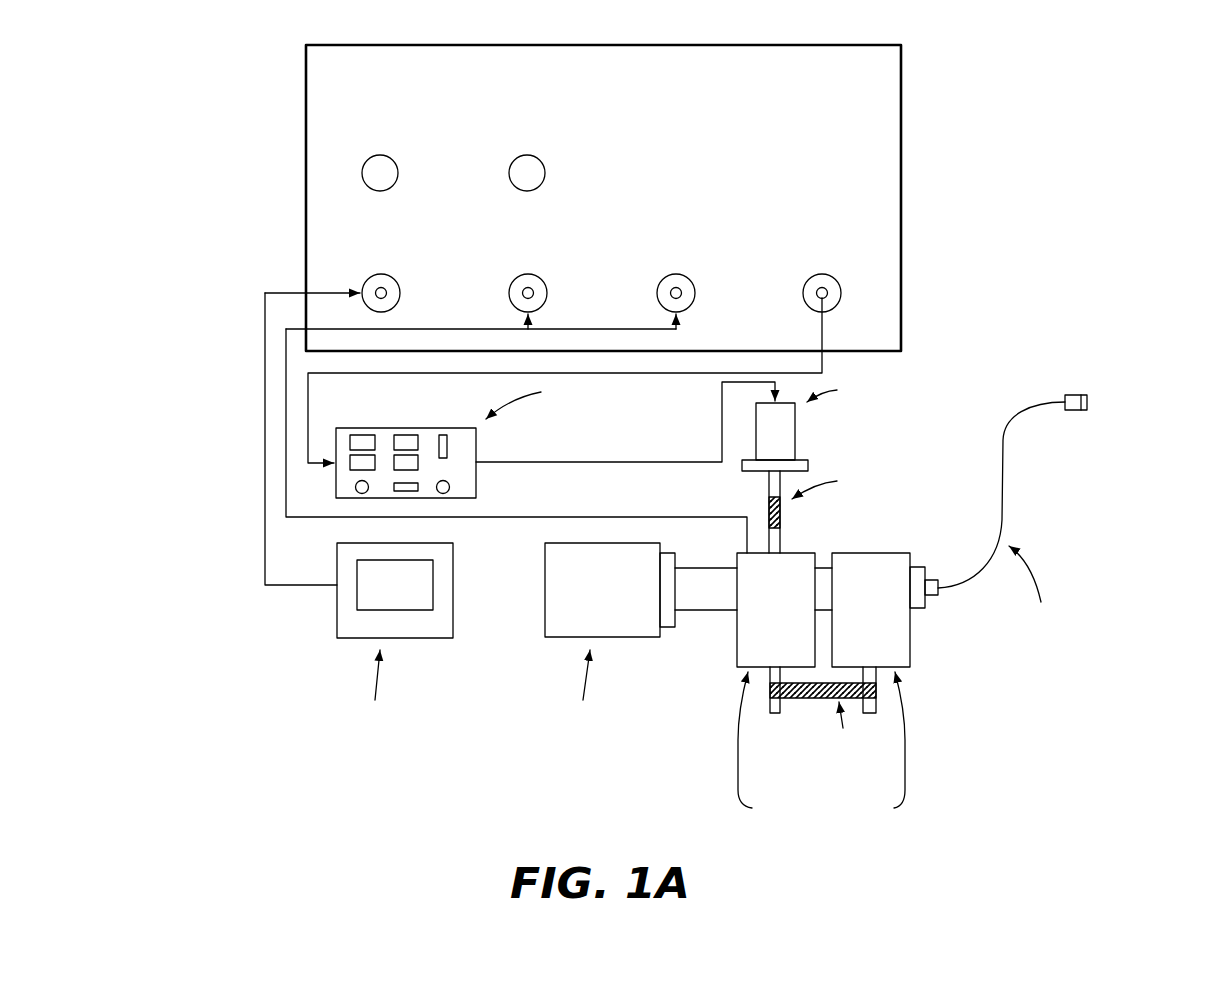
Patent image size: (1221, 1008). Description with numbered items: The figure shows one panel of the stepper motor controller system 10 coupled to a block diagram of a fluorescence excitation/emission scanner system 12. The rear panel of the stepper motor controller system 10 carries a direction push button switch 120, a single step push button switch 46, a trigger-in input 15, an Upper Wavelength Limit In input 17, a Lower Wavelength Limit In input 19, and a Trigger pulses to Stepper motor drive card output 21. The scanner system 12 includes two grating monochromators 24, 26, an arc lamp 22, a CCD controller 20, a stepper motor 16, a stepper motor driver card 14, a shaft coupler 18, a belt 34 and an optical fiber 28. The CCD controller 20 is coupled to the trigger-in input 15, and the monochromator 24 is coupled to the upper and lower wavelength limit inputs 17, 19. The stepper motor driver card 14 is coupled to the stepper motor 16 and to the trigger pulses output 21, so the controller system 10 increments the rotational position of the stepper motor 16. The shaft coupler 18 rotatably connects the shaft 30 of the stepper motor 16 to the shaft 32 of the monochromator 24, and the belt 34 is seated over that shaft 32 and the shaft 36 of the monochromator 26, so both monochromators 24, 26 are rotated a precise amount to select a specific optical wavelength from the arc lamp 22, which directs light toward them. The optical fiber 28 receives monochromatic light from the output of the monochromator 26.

The stepper motor controller system 10 is at (897, 65).
The fluorescence excitation/emission scanner system 12 is at (216, 432).
The stepper motor driver card 14 is at (472, 487).
The trigger-in input 15 is at (399, 293).
The stepper motor 16 is at (789, 440).
The Upper Wavelength Limit In input 17 is at (546, 293).
The shaft coupler 18 is at (781, 514).
The Lower Wavelength Limit In input 19 is at (694, 293).
The CCD controller 20 is at (341, 617).
The Trigger pulses to Stepper motor drive card output 21 is at (840, 293).
The arc lamp 22 is at (545, 617).
The monochromator 24 is at (737, 646).
The monochromator 26 is at (906, 647).
The optical fiber 28 is at (1005, 495).
The shaft 30 is at (768, 483).
The shaft 32 is at (781, 538).
The belt 34 is at (797, 702).
The shaft 36 is at (870, 717).
The single step push button switch 46 is at (544, 173).
The direction push button switch 120 is at (397, 173).